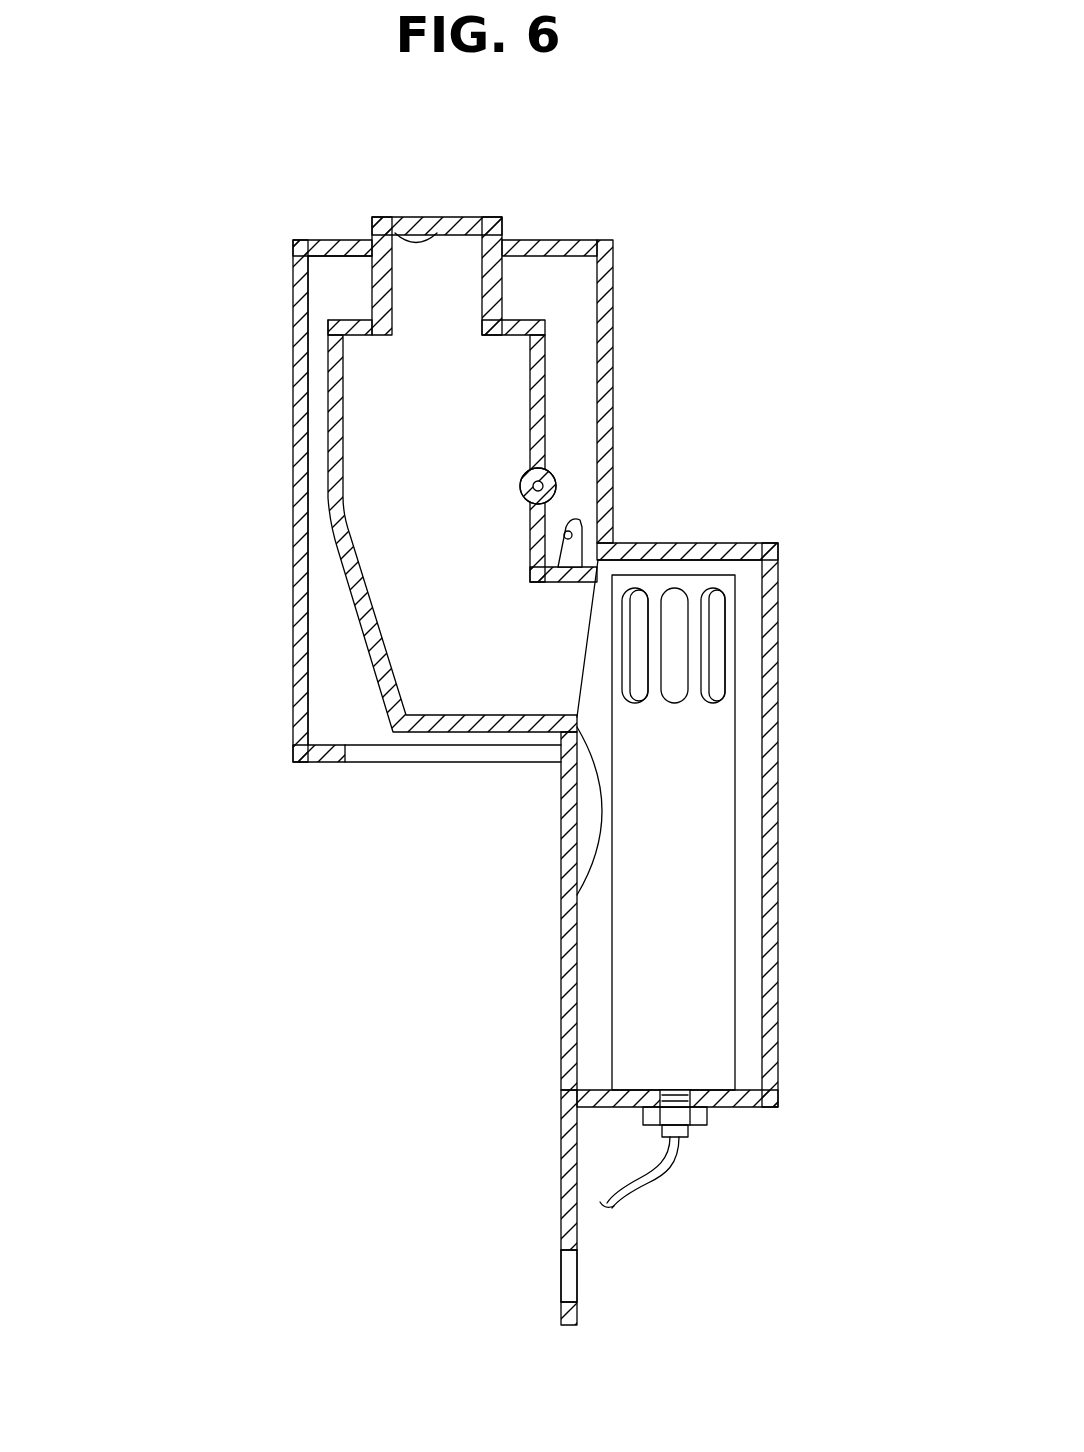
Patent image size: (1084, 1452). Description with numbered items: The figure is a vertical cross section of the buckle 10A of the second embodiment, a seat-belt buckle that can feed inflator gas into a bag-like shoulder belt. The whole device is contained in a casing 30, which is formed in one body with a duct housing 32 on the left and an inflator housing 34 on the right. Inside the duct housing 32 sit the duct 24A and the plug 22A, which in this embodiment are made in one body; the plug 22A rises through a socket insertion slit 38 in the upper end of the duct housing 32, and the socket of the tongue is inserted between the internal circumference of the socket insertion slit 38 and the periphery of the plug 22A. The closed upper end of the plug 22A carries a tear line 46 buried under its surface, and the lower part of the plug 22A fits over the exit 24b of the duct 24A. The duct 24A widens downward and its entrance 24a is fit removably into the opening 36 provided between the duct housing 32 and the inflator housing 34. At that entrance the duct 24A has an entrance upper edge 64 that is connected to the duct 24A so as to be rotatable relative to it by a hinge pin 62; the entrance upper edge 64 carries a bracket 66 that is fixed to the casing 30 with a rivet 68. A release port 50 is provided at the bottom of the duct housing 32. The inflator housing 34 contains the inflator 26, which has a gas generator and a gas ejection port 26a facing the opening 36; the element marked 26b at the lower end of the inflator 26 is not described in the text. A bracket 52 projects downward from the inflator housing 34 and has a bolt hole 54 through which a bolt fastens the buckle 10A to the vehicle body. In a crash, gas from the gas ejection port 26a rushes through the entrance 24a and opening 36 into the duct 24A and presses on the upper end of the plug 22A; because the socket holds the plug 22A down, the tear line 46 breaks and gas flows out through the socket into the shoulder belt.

The buckle 10A is at (653, 234).
The casing 30 is at (289, 320).
The socket insertion slit 38 is at (337, 240).
The duct housing 32 is at (292, 702).
The release port 50 is at (393, 753).
The plug 22A is at (492, 217).
The tear line 46 is at (437, 233).
The duct 24A is at (335, 528).
The exit of the duct 24b is at (442, 320).
The entrance of the duct 24a is at (592, 634).
The hinge pin 62 is at (552, 476).
The entrance upper edge 64 is at (545, 513).
The bracket 66 is at (578, 525).
The rivet 68 is at (573, 534).
The opening 36 is at (560, 909).
The inflator housing 34 is at (560, 1043).
The bracket 52 is at (560, 1213).
The bolt hole 54 is at (578, 1285).
The inflator 26 is at (708, 923).
The gas ejection port of the inflator 26a is at (710, 655).
The cable connector 26b is at (657, 1175).